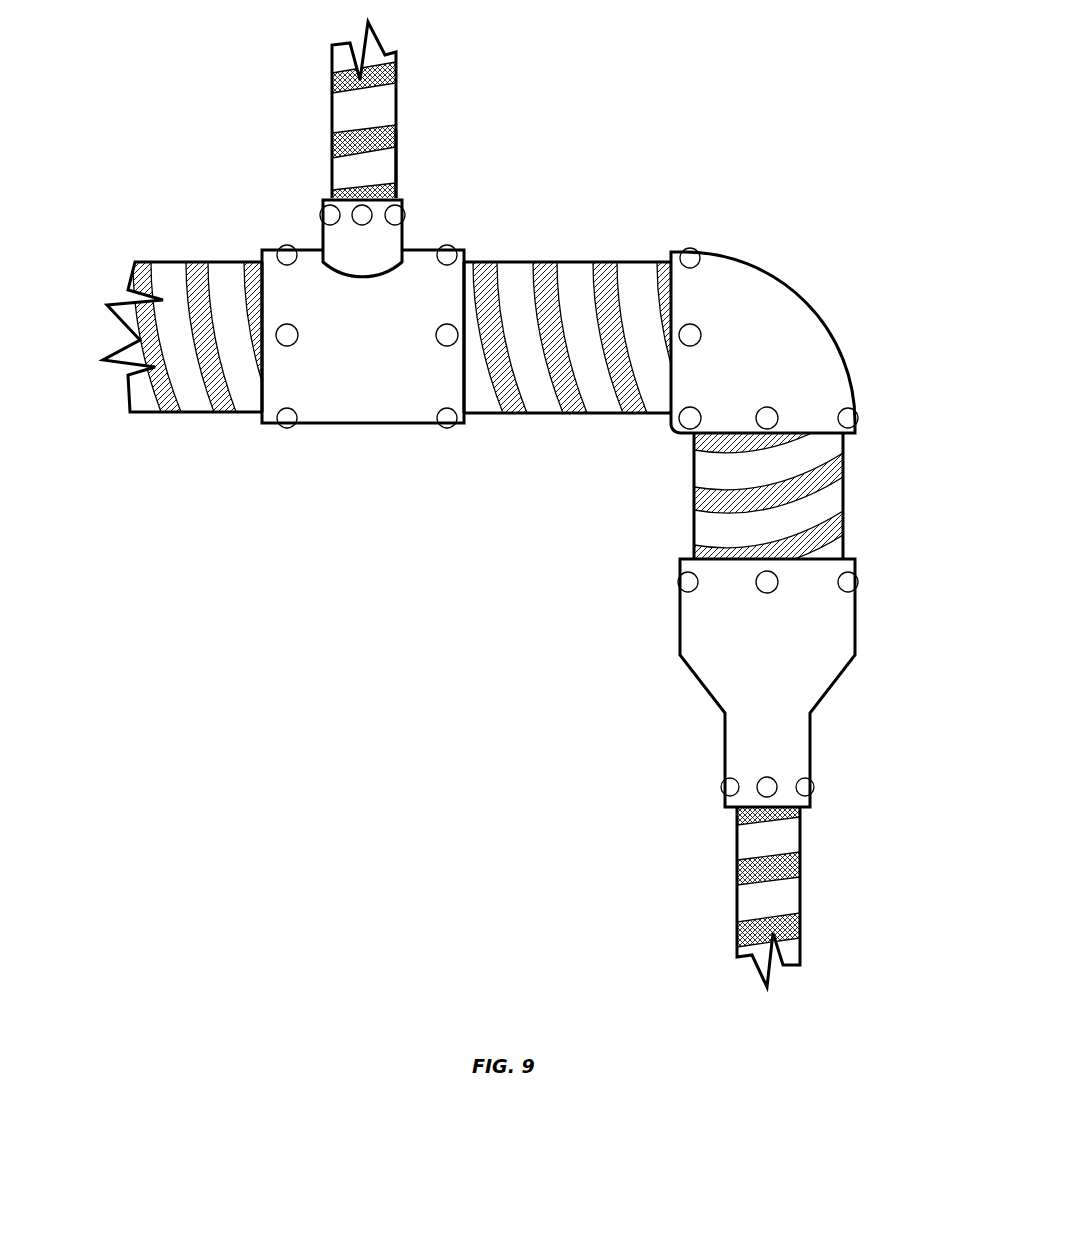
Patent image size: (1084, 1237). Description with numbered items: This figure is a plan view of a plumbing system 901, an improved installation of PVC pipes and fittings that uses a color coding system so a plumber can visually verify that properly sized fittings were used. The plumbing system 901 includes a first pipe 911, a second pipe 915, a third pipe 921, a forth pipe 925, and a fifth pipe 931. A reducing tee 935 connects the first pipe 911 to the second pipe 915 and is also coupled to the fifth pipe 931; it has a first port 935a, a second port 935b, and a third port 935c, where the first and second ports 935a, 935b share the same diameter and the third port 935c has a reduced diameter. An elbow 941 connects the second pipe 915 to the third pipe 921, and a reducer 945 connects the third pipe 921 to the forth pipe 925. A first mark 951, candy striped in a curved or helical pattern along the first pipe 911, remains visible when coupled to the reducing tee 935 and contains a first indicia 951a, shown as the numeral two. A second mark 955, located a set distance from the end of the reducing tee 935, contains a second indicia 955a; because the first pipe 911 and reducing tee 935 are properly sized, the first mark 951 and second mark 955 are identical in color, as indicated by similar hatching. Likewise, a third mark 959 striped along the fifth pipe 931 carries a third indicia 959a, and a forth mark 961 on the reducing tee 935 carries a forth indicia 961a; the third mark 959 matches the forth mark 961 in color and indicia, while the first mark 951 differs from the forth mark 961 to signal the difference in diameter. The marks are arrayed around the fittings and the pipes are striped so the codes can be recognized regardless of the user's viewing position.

The plumbing system 901 is at (630, 122).
The first pipe 911 is at (200, 413).
The second pipe 915 is at (518, 262).
The third pipe 921 is at (790, 527).
The forth pipe 925 is at (784, 909).
The fifth pipe 931 is at (382, 122).
The reducing tee 935 is at (384, 357).
The first port 935a is at (266, 452).
The second port 935b is at (456, 458).
The third port 935c is at (300, 208).
The elbow 941 is at (778, 367).
The reducer 945 is at (781, 661).
The first mark 951 is at (215, 415).
The first indicia 951a is at (198, 273).
The second mark 955 is at (292, 347).
The second indicia 955a is at (286, 324).
The third mark 959 is at (400, 155).
The third indicia 959a is at (384, 130).
The forth mark 961 is at (350, 220).
The forth indicia 961a is at (323, 226).